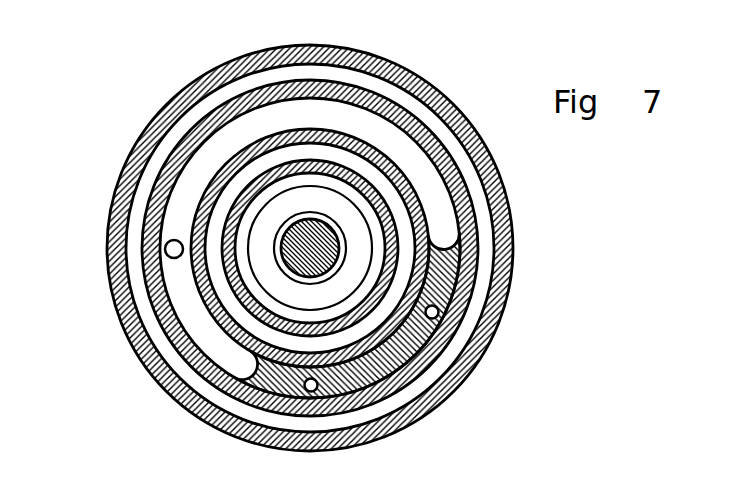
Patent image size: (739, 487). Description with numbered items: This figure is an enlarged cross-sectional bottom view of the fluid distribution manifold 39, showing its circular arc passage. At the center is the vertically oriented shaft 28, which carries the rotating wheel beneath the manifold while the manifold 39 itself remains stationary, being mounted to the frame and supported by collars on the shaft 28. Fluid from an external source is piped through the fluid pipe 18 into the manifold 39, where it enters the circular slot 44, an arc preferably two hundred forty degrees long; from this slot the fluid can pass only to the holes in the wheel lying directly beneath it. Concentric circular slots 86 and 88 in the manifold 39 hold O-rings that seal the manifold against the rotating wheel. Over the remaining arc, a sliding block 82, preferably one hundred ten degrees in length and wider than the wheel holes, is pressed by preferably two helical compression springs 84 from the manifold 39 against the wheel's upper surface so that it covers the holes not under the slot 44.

The fluid pipe 18 is at (165, 248).
The shaft 28 is at (330, 231).
The fluid distribution manifold 39 is at (500, 190).
The circular slot 44 is at (187, 305).
The sliding block 82 is at (405, 355).
The helical compression springs 84 is at (438, 312).
The circular slot 86 is at (158, 153).
The circular slot 88 is at (218, 203).